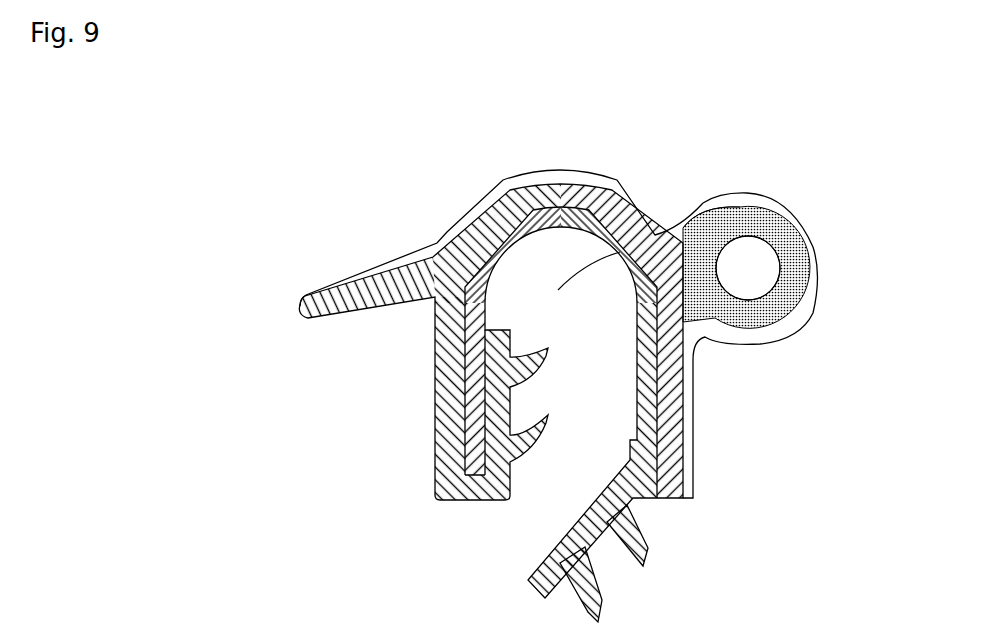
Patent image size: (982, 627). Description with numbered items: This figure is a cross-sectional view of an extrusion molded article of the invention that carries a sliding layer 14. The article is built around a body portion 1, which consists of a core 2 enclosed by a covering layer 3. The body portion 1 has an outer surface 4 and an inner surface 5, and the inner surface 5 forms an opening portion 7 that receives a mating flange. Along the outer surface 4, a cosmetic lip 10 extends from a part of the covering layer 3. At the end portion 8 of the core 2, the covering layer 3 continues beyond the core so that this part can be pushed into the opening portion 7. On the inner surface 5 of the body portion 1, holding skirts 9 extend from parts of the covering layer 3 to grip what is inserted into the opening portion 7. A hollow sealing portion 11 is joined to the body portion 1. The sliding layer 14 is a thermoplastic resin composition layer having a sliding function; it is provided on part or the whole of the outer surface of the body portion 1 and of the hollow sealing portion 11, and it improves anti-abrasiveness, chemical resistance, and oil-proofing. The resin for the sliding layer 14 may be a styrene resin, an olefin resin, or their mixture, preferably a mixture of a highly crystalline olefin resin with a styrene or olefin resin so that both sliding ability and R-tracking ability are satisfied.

The body portion 1 is at (628, 192).
The core 2 is at (557, 183).
The covering layer 3 is at (482, 192).
The outer surface 4 is at (434, 343).
The inner surface 5 is at (633, 305).
The opening portion 7 is at (660, 235).
The end portion 8 is at (456, 502).
The holding skirt 9 is at (535, 438).
The cosmetic lip 10 is at (360, 268).
The hollow sealing portion 11 is at (797, 216).
The sliding layer 14 is at (820, 280).